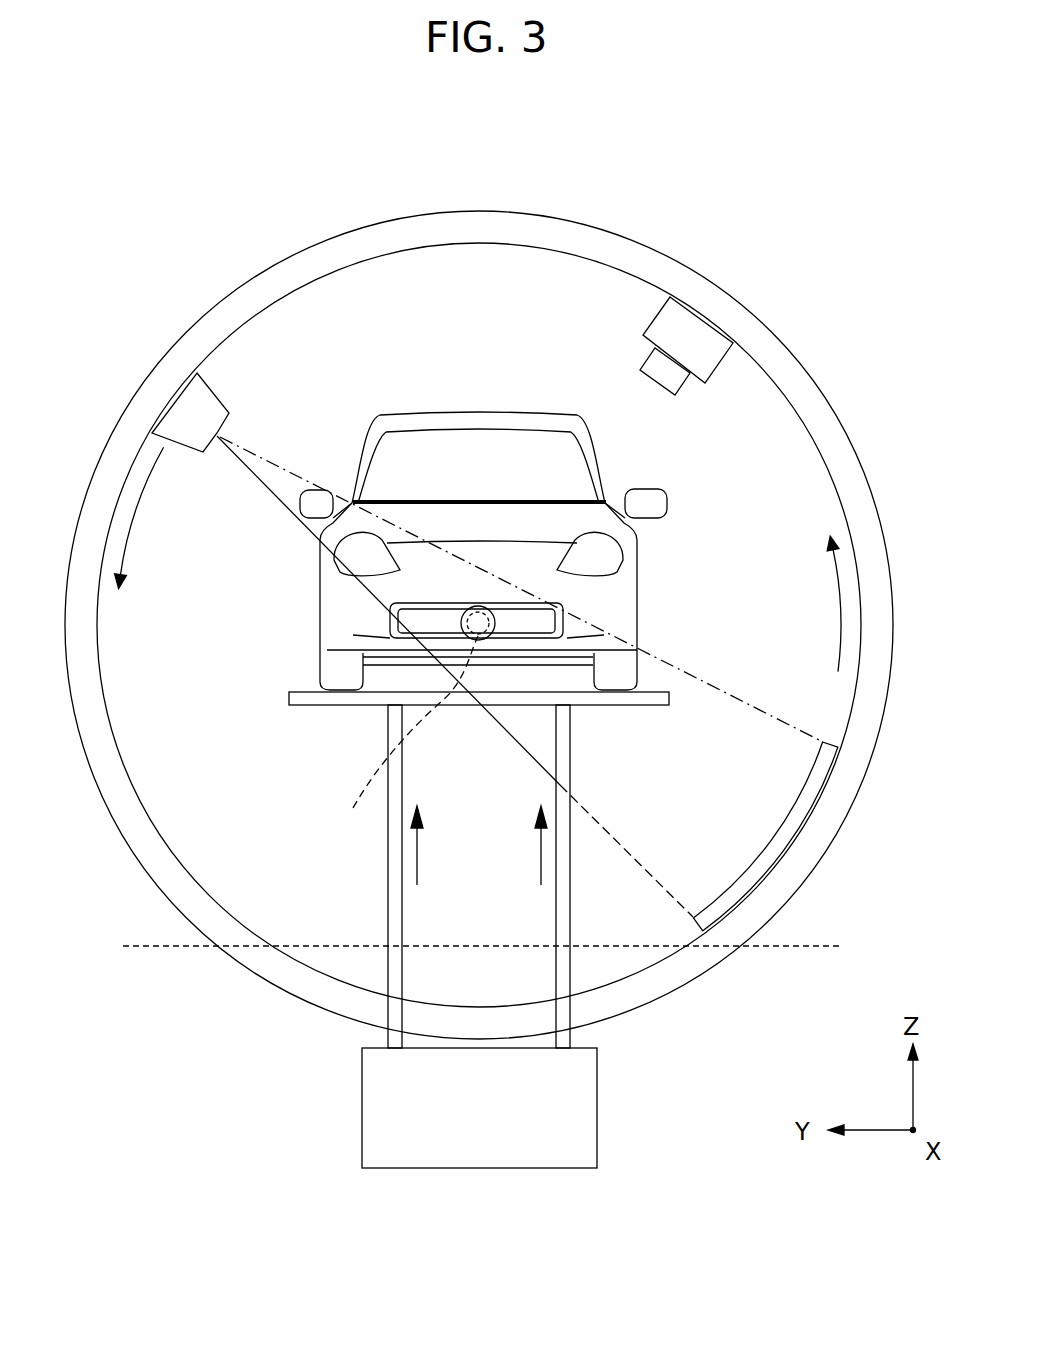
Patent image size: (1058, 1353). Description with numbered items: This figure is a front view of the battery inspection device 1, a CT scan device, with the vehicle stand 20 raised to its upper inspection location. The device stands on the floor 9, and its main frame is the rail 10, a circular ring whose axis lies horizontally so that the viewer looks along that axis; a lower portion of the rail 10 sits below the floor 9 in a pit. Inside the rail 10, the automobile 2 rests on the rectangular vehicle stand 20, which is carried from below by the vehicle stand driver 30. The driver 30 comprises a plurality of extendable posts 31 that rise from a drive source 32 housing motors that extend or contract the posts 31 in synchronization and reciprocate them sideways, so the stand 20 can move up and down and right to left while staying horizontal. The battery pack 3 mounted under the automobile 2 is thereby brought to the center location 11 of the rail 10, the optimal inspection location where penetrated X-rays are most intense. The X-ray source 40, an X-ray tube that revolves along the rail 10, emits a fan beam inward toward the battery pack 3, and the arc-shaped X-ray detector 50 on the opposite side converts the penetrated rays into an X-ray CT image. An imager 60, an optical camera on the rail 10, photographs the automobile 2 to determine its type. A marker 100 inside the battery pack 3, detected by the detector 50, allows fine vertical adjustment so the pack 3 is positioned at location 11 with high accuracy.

The battery inspection device 1 is at (258, 140).
The automobile 2 is at (485, 414).
The battery pack 3 is at (494, 636).
The floor 9 is at (160, 945).
The rail 10 is at (470, 219).
The center location 11 is at (402, 734).
The vehicle stand 20 is at (298, 691).
The vehicle stand driver 30 is at (475, 984).
The post 31 is at (393, 976).
The drive source 32 is at (483, 1145).
The X-ray source 40 is at (212, 385).
The X-ray detector 50 is at (793, 827).
The imager 60 is at (694, 335).
The marker 100 is at (543, 626).